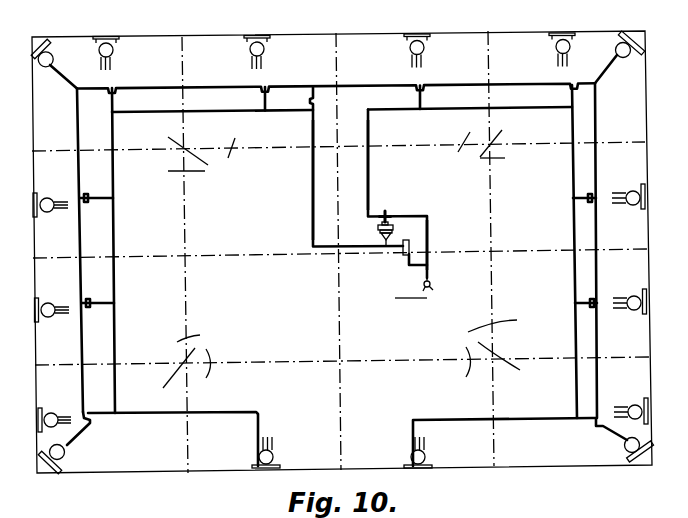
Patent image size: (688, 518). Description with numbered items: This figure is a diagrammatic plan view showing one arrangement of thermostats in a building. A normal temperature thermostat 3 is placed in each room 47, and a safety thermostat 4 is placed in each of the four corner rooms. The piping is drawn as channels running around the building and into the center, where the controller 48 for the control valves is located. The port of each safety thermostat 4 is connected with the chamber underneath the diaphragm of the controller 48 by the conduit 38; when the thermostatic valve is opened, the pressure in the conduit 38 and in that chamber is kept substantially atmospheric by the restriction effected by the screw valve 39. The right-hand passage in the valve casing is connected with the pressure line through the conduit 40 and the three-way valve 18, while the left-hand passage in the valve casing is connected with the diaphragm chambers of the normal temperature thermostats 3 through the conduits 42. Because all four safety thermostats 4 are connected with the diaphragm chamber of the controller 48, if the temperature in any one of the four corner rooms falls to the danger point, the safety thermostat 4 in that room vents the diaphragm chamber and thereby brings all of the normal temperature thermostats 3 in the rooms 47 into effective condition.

The normal temperature thermostat 3 is at (113, 51).
The safety thermostat 4 is at (47, 55).
The three-way valve 18 is at (433, 277).
The conduit 38 is at (313, 195).
The screw valve 39 is at (403, 253).
The conduit 40 is at (428, 222).
The conduits 42 is at (368, 181).
The room 47 is at (341, 259).
The controller 48 is at (390, 212).